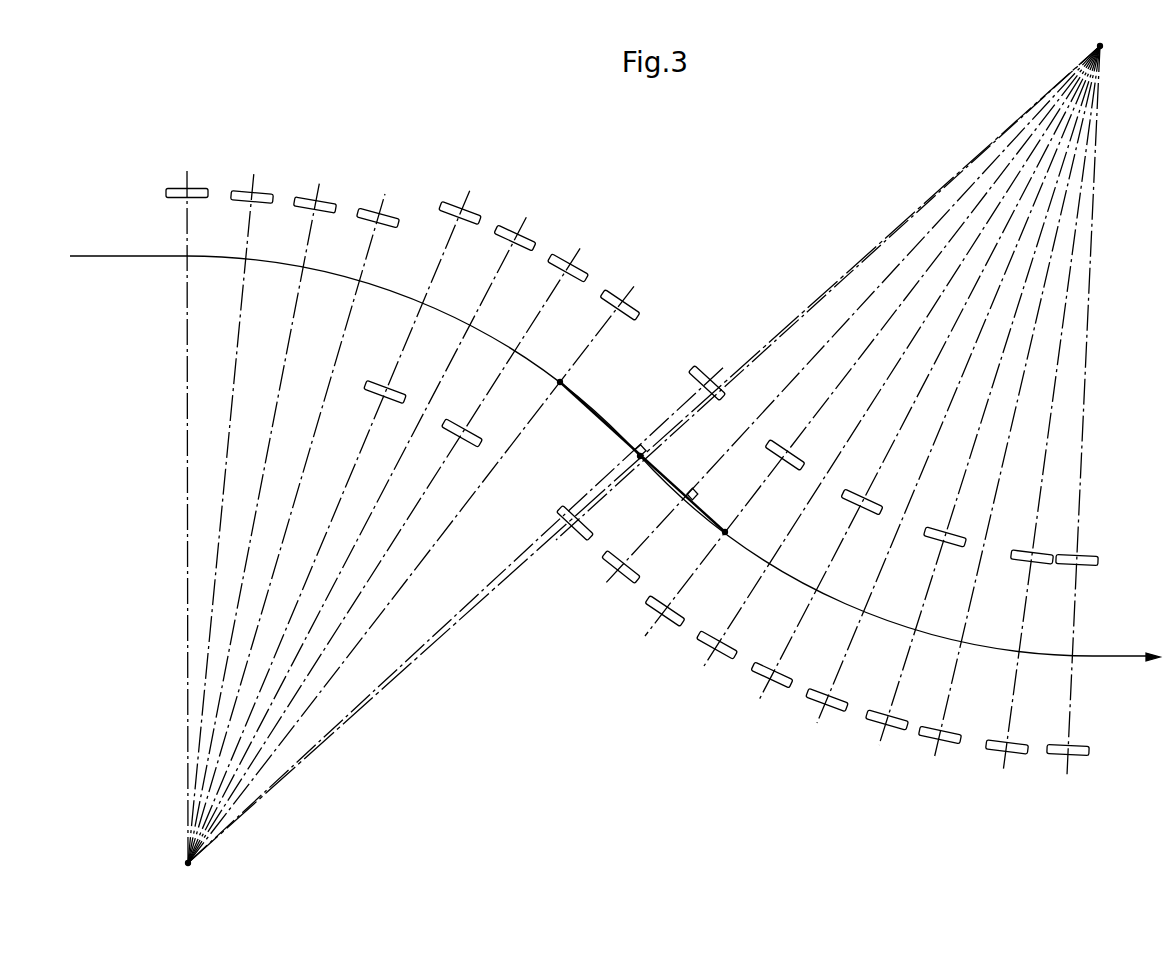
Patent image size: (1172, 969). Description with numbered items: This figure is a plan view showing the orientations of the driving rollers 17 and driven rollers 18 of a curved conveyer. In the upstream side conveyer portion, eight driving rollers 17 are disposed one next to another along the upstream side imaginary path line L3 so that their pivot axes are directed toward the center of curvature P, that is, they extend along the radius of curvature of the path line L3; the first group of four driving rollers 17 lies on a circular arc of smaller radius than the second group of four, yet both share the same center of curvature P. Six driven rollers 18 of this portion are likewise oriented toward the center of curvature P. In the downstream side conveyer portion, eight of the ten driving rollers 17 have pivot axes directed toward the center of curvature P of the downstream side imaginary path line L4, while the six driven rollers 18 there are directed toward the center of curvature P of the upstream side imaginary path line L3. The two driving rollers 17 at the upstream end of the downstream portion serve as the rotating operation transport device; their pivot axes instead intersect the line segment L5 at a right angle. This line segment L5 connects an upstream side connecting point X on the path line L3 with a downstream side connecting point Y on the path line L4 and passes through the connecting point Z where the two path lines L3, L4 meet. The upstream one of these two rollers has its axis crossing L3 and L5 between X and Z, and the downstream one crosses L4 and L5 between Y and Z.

The driving rollers 17 is at (207, 190).
The driven rollers 18 is at (385, 400).
The center of curvature P is at (186, 862).
The upstream side connecting point X is at (560, 380).
The downstream side connecting point Y is at (725, 536).
The connecting point Z is at (645, 456).
The upstream side imaginary path line L3 is at (312, 508).
The downstream side imaginary path line L4 is at (962, 409).
The line segment L5 is at (600, 408).